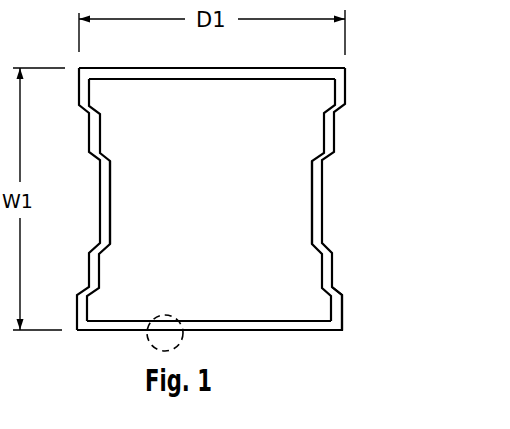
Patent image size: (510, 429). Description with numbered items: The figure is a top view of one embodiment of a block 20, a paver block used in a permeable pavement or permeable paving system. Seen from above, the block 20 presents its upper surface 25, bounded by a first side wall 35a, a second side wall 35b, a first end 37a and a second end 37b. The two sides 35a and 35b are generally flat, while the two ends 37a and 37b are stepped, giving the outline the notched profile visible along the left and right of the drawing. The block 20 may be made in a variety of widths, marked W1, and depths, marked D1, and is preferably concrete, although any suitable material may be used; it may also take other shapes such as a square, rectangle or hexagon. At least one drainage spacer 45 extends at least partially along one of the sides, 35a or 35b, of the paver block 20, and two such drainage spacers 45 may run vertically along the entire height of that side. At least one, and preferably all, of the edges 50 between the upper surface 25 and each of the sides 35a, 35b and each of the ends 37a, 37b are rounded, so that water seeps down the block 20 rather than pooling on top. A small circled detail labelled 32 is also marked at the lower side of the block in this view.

The block 20 is at (373, 61).
The upper surface 25 is at (282, 207).
The corner portion 32 is at (165, 322).
The first side wall 35a is at (324, 335).
The second side wall 35b is at (268, 65).
The first end 37a is at (86, 135).
The second end 37b is at (335, 134).
The drainage spacer 45 is at (291, 334).
The edges 50 is at (334, 315).